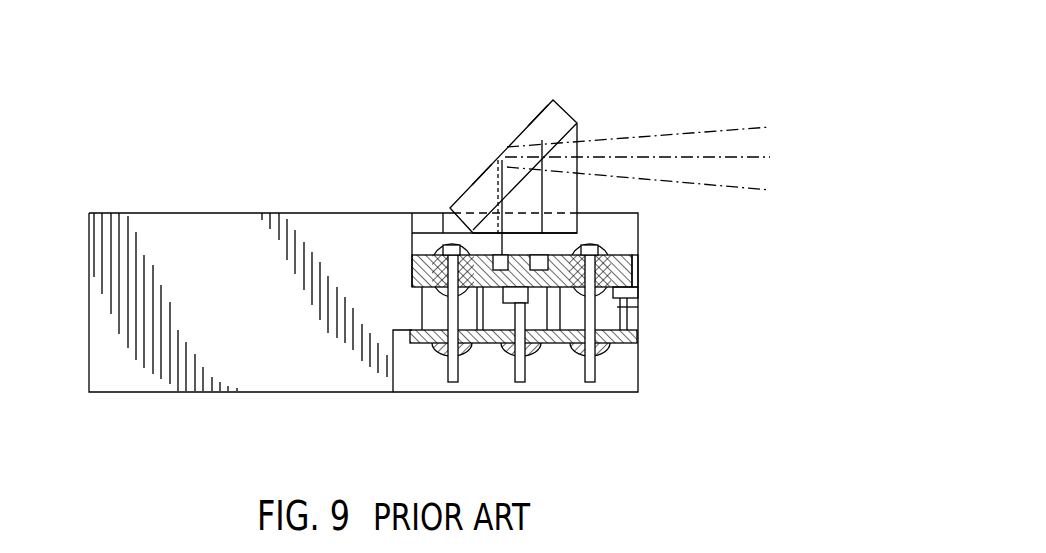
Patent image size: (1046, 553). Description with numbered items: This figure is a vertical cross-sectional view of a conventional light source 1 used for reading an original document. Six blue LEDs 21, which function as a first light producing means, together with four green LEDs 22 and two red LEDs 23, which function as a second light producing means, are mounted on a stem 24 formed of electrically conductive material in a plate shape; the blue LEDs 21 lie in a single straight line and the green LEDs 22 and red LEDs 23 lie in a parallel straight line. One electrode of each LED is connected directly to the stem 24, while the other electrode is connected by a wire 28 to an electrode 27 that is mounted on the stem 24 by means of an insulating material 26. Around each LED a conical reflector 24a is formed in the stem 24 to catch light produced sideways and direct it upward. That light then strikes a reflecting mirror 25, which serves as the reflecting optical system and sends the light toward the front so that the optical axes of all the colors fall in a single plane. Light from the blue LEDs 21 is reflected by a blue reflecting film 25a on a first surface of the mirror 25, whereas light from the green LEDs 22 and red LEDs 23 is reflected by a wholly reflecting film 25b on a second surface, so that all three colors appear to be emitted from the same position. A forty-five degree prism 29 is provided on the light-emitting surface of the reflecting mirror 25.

The light source 1 is at (197, 198).
The blue LEDs 21 is at (545, 250).
The green LEDs 22 is at (480, 250).
The red LEDs 23 is at (495, 255).
The stem 24 is at (642, 268).
The conical reflector 24a is at (478, 300).
The reflecting mirror 25 is at (572, 116).
The blue reflecting film 25a is at (541, 114).
The wholly reflecting film 25b is at (485, 170).
The insulating material 26 is at (432, 255).
The electrode 27 is at (445, 372).
The wire 28 is at (449, 244).
The 45° prism 29 is at (581, 138).